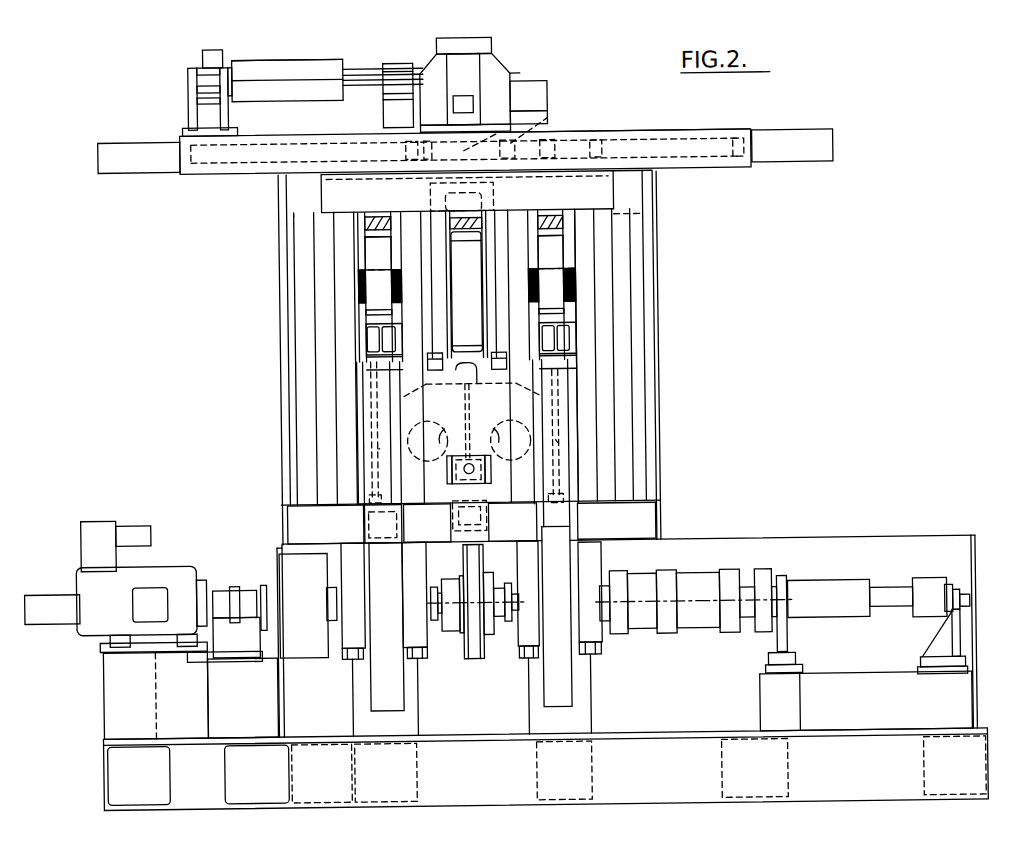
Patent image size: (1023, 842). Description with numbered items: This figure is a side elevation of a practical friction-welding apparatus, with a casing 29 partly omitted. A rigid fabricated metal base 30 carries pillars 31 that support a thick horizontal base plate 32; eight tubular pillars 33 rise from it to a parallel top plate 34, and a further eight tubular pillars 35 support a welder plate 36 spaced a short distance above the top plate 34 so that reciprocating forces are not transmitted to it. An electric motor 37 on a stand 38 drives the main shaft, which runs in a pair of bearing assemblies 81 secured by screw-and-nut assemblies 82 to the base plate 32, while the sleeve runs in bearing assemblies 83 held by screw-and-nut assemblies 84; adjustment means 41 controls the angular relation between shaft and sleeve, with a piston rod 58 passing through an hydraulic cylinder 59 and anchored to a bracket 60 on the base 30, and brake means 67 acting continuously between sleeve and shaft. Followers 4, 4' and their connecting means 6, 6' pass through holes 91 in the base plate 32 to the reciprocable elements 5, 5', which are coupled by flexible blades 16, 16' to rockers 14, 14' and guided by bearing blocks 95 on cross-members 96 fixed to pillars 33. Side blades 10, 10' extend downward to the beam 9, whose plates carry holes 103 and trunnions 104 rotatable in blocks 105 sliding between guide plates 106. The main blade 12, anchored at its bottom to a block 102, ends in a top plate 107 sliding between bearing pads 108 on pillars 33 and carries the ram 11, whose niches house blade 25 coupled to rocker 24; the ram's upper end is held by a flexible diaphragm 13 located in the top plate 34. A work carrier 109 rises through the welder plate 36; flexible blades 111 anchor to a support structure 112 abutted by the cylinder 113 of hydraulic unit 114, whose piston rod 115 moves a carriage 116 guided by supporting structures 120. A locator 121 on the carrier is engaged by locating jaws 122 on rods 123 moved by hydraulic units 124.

The follower 4 is at (365, 642).
The follower 4' is at (581, 620).
The reciprocable element 5 is at (526, 450).
The reciprocable element 5' is at (620, 345).
The connecting means 6 is at (391, 511).
The connecting means 6' is at (627, 431).
The beam 9 is at (466, 397).
The side blade 10 is at (325, 432).
The side blade 10' is at (623, 441).
The ram 11 is at (600, 198).
The main blade 12 is at (477, 370).
The flexible diaphragm 13 is at (648, 215).
The rocker 14 is at (322, 288).
The rocker 14' is at (616, 284).
The flexible blade 16 is at (322, 261).
The flexible blade 16' is at (617, 257).
The rocker 24 is at (487, 243).
The flexible blade 25 is at (367, 284).
The casing 29 is at (662, 469).
The base 30 is at (129, 759).
The pillars 31 is at (402, 721).
The base plate 32 is at (637, 517).
The tubular pillars 33 is at (416, 229).
The top plate 34 is at (657, 191).
The tubular pillars 35 is at (306, 469).
The welder plate 36 is at (707, 136).
The electric motor 37 is at (178, 585).
The stand 38 is at (124, 694).
The adjustment means 41 is at (713, 633).
The piston rod 58 is at (895, 600).
The hydraulic cylinder 59 is at (838, 597).
The bracket 60 is at (941, 644).
The brake means 67 is at (474, 666).
The bearing assemblies 81 is at (346, 633).
The screw-and-nut assemblies 82 is at (340, 665).
The bearing assemblies 83 is at (517, 636).
The screw-and-nut assemblies 84 is at (525, 667).
The holes 91 is at (366, 521).
The bearing blocks 95 is at (408, 300).
The cross-members 96 is at (572, 289).
The block 102 is at (472, 498).
The holes 103 is at (440, 433).
The trunnions 104 is at (502, 487).
The blocks 105 is at (427, 523).
The guide plates 106 is at (434, 471).
The top plate 107 is at (500, 432).
The bearing pads 108 is at (428, 370).
The work carrier 109 is at (500, 50).
The flexible blades 111 is at (267, 73).
The support structure 112 is at (195, 85).
The cylinder 113 is at (243, 68).
The hydraulic piston-cylinder unit 114 is at (303, 55).
The piston rod 115 is at (372, 68).
The carriage 116 is at (523, 100).
The supporting structures 120 is at (470, 43).
The locator 121 is at (543, 105).
The locating jaws 122 is at (408, 125).
The rods 123 is at (263, 145).
The hydraulic piston-and-cylinder unit 124 is at (140, 137).